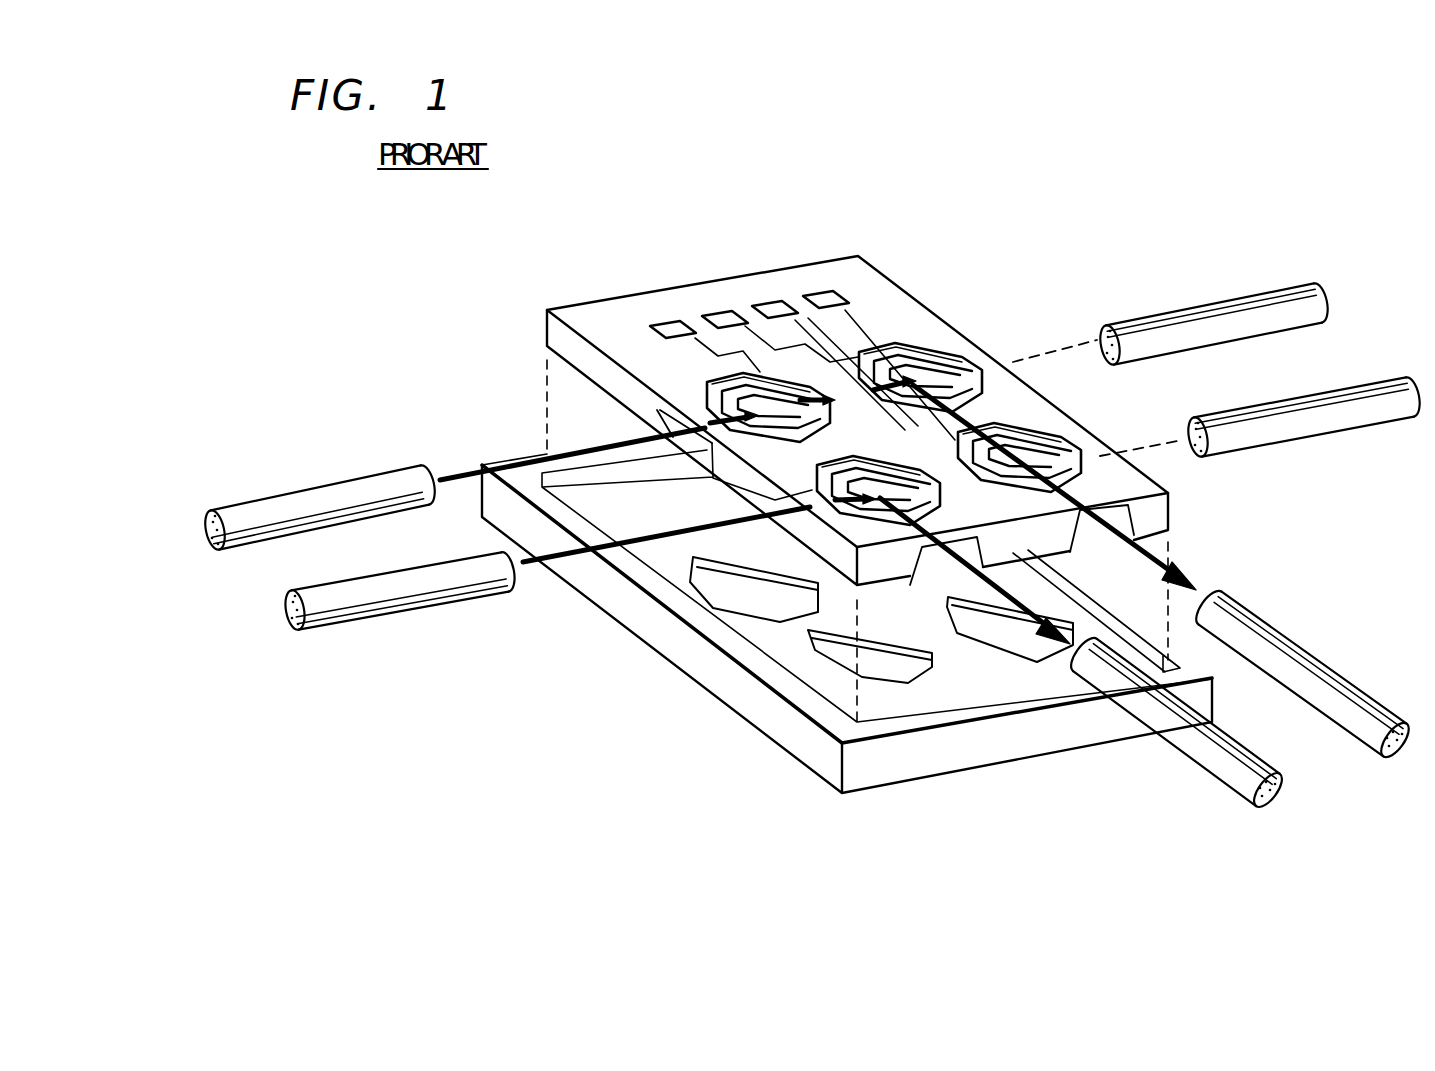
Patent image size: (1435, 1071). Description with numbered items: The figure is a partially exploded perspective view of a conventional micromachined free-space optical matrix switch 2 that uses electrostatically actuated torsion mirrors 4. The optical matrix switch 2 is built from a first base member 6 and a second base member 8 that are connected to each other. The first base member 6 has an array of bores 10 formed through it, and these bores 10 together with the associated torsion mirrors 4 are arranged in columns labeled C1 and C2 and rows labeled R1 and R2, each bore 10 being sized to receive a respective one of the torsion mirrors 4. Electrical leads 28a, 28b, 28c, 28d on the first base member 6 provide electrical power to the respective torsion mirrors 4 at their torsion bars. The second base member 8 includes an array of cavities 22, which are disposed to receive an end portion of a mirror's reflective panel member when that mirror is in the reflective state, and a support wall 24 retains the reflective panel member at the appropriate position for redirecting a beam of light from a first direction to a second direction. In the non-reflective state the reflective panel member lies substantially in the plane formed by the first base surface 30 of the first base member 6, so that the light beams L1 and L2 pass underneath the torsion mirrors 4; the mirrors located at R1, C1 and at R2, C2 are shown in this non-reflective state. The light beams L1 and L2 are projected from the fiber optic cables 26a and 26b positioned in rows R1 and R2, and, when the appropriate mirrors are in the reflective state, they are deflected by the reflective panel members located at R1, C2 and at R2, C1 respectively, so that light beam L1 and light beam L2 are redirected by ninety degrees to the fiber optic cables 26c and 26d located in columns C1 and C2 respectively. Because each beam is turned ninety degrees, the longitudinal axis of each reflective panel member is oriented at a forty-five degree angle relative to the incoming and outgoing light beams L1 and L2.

The optical matrix switch 2 is at (1068, 302).
The torsion mirror 4 is at (770, 398).
The first base member 6 is at (1157, 508).
The second base member 8 is at (793, 745).
The bore 10 is at (768, 432).
The cavity 22 is at (828, 652).
The support wall 24 is at (767, 578).
The fiber optic cable 26a is at (310, 503).
The fiber optic cable 26b is at (385, 605).
The fiber optic cable 26c is at (1215, 770).
The fiber optic cable 26d is at (1330, 677).
The electrical lead 28a is at (657, 318).
The electrical lead 28b is at (760, 299).
The electrical lead 28c is at (773, 300).
The electrical lead 28d is at (823, 293).
The first base surface 30 is at (928, 327).
The column C1 is at (623, 310).
The column C2 is at (765, 270).
The light beam L1 is at (507, 466).
The light beam L2 is at (560, 568).
The row R1 is at (205, 535).
The row R2 is at (282, 617).